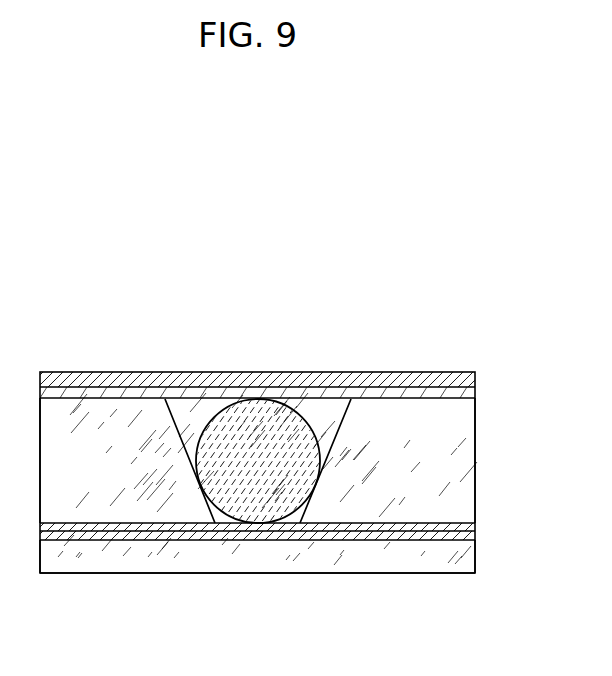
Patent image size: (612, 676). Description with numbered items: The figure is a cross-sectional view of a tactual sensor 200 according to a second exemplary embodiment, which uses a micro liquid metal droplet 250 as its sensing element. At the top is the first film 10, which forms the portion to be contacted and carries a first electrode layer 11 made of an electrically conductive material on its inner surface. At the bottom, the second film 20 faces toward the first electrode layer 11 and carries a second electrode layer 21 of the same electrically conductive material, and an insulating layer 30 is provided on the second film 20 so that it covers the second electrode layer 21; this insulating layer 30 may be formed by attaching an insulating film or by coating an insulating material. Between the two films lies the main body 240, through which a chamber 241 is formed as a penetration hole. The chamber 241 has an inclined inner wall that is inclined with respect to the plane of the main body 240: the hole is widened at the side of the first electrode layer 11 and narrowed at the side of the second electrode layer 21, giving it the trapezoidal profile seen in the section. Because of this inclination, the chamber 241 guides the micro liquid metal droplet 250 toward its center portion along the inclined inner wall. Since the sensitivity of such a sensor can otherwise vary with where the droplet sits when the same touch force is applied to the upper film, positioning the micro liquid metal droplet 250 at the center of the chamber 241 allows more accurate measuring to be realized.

The tactual sensor 200 is at (272, 198).
The first film 10 is at (373, 380).
The first electrode layer 11 is at (434, 392).
The main body 240 is at (462, 459).
The chamber 241 is at (326, 411).
The micro liquid metal droplet 250 is at (270, 403).
The insulating layer 30 is at (336, 528).
The second electrode layer 21 is at (398, 536).
The second film 20 is at (448, 558).